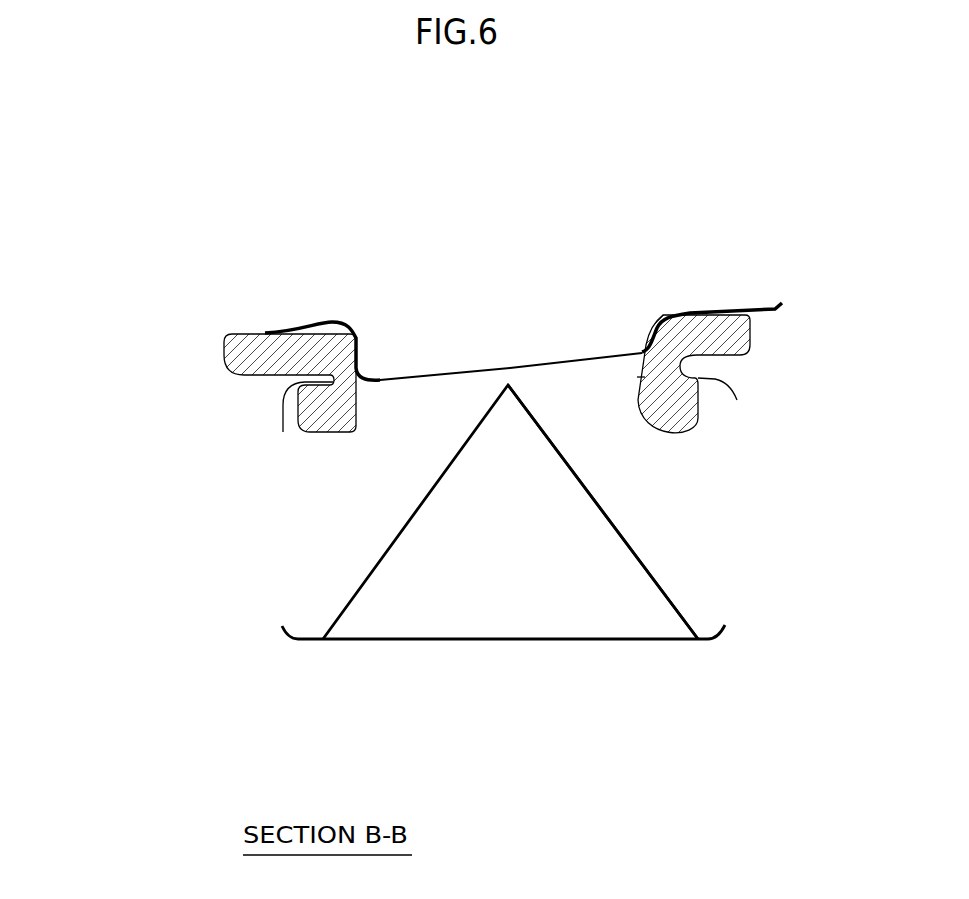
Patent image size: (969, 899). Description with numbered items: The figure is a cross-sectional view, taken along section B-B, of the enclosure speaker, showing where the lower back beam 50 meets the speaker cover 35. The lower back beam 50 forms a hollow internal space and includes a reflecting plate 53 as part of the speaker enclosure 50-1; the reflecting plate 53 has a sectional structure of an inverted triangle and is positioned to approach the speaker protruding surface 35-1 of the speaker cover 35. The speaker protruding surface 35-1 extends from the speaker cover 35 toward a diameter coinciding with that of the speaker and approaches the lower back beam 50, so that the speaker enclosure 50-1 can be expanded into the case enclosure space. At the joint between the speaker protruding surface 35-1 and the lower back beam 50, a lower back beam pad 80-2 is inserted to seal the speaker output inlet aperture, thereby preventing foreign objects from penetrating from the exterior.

The lower back beam pad 80-2 is at (257, 352).
The speaker protruding surface 35-1 is at (511, 358).
The speaker cover 35 is at (728, 308).
The speaker enclosure 50-1 is at (302, 540).
The reflecting plate 53 is at (603, 513).
The lower back beam 50 is at (503, 640).